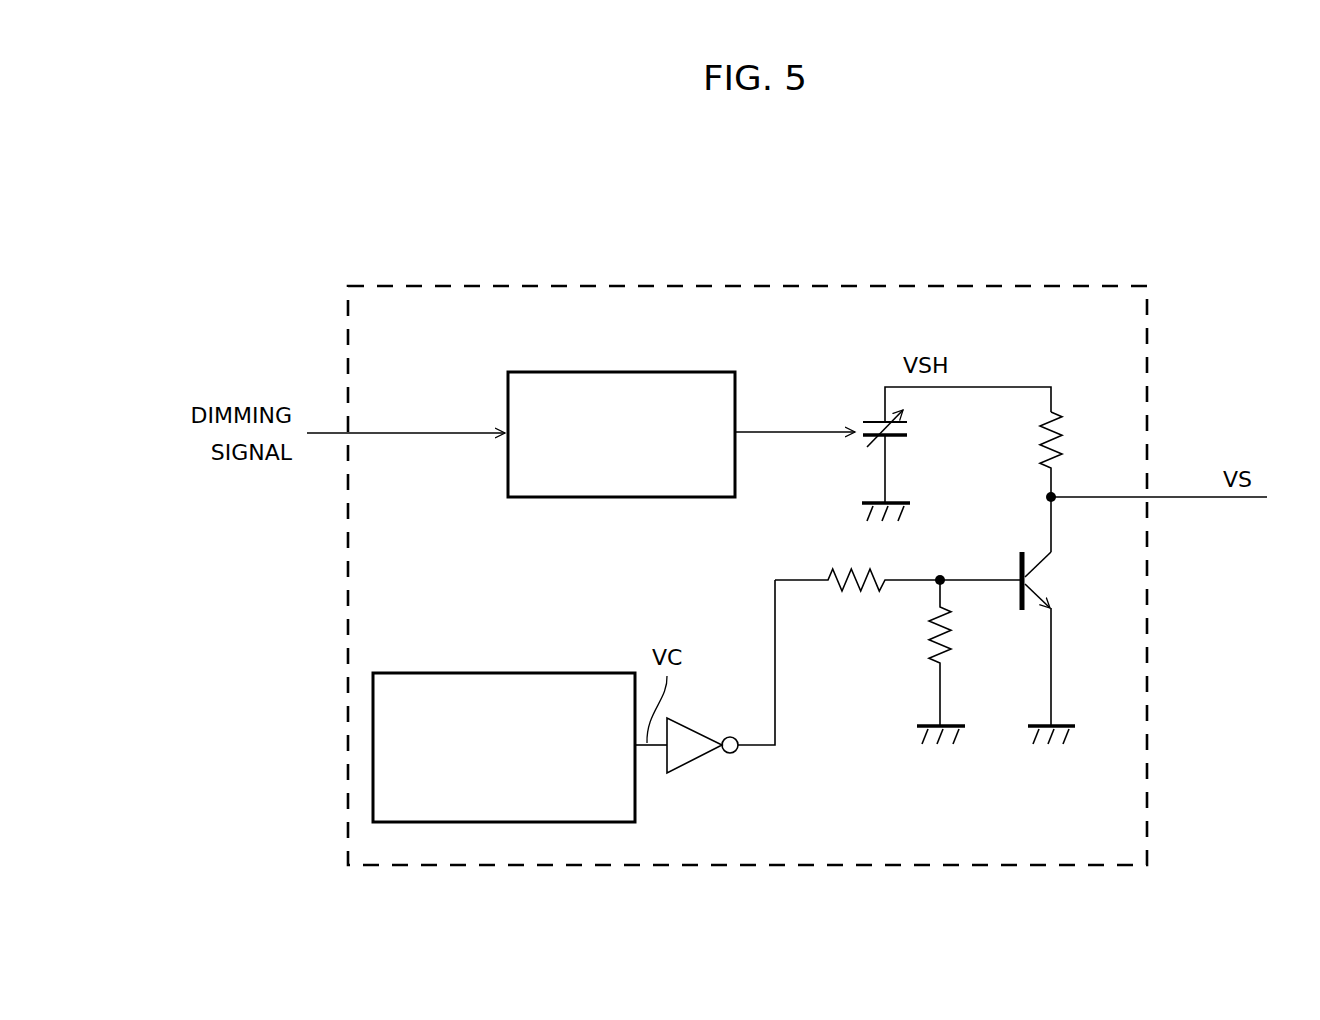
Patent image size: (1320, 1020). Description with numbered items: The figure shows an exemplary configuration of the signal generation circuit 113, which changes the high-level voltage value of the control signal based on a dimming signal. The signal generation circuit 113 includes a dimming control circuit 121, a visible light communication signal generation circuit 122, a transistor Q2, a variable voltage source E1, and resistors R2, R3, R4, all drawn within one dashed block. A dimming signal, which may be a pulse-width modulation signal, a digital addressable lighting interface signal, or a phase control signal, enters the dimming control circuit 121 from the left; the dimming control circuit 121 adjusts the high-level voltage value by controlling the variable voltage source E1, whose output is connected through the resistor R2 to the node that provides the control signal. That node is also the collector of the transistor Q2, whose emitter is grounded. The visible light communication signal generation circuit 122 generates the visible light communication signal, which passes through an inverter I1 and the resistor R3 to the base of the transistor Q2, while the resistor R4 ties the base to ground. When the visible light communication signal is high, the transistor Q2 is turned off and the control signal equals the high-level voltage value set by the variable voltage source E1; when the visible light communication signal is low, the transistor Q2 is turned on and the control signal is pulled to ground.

The signal generation circuit 113 is at (512, 286).
The dimming control circuit 121 is at (660, 372).
The visible light communication signal generation circuit 122 is at (493, 673).
The variable voltage source E1 is at (901, 465).
The resistor R2 is at (1071, 454).
The resistor R3 is at (857, 600).
The resistor R4 is at (954, 662).
The transistor Q2 is at (1056, 620).
The inverter I1 is at (702, 760).